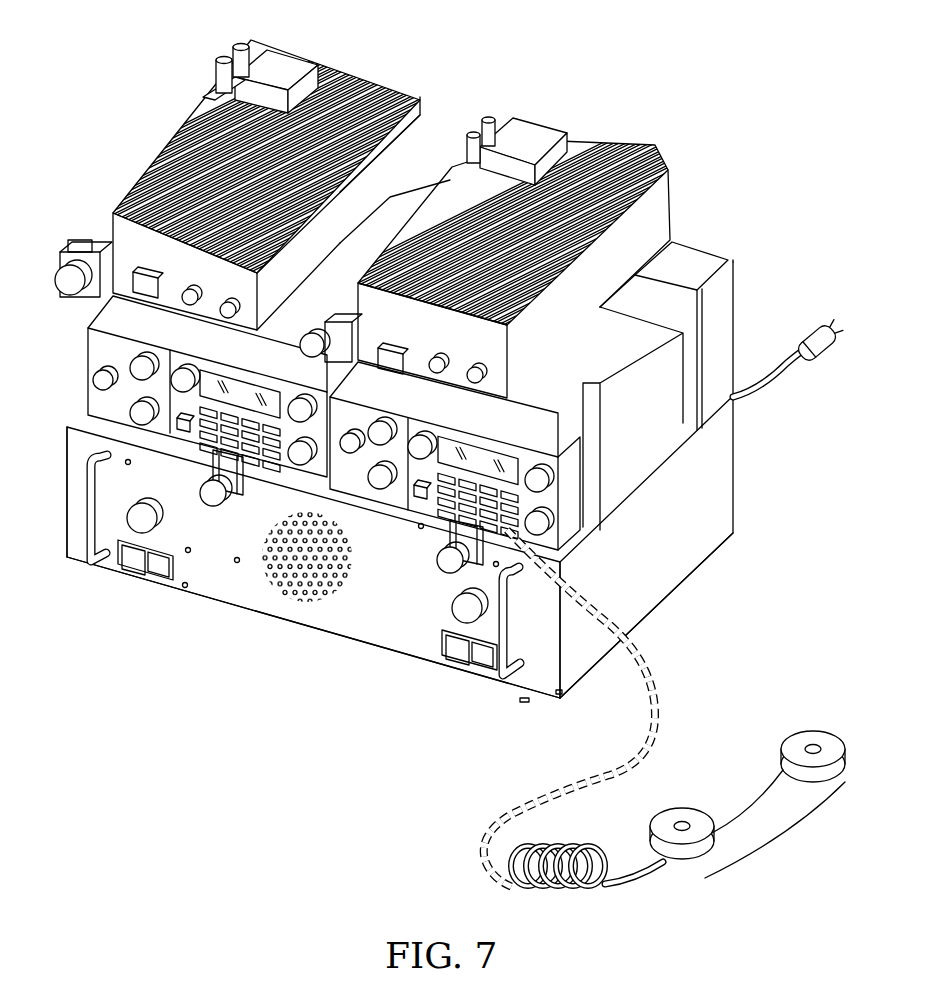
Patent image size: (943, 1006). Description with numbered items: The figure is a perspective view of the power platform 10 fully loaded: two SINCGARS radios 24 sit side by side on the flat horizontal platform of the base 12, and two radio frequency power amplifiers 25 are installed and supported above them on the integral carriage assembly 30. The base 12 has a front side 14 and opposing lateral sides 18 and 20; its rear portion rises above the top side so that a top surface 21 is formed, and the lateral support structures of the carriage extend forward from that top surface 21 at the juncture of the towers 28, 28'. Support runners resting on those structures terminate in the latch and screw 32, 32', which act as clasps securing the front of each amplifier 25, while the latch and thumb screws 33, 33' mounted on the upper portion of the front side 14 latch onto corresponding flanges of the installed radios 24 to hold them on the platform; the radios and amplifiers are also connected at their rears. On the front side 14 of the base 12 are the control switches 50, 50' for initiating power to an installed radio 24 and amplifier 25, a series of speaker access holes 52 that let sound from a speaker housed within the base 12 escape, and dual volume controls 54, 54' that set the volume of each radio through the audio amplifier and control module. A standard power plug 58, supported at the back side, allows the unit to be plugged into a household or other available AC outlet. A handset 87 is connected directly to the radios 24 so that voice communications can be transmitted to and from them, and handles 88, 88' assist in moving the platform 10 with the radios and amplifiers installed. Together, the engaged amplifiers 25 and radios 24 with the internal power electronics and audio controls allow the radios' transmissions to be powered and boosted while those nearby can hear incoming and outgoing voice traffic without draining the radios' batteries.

The power platform 10 is at (236, 690).
The base 12 is at (707, 494).
The front side 14 is at (332, 623).
The lateral side 18 is at (670, 585).
The lateral side 20 is at (62, 486).
The top surface of rear portion 21 is at (432, 182).
The SINCGARS radio 24 is at (80, 395).
The RFPA 25 is at (385, 85).
The tower 28 is at (273, 71).
The tower 28' is at (535, 139).
The carriage assembly 30 is at (577, 380).
The latch and screw 32 is at (71, 305).
The latch and screw 32' is at (304, 340).
The latch and thumb screw 33 is at (203, 558).
The latch and thumb screw 33' is at (408, 606).
The control switch 50 is at (128, 579).
The control switch 50' is at (465, 669).
The speaker access holes 52 is at (293, 595).
The volume control 54 is at (89, 517).
The volume control 54' is at (431, 642).
The power plug 58 is at (817, 362).
The handset 87 is at (757, 820).
The handle 88 is at (61, 516).
The handle 88' is at (525, 654).